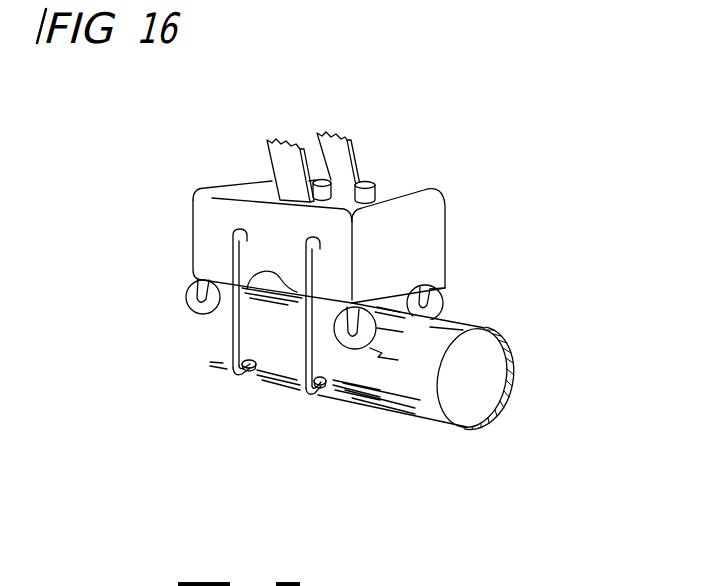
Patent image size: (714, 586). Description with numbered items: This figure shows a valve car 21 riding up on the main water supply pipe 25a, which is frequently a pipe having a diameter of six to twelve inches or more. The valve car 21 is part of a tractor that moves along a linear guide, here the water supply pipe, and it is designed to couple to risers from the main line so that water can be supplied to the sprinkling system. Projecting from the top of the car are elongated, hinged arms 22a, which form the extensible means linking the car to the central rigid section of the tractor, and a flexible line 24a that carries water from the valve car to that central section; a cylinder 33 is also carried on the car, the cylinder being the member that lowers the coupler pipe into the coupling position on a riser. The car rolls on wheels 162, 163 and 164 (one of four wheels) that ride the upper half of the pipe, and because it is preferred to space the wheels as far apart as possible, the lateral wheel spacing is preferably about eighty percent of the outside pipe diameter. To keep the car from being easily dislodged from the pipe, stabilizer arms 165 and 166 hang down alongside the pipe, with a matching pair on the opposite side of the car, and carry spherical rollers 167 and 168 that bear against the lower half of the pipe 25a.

The valve car 21 is at (441, 252).
The elongated hinged arm 22a is at (270, 170).
The flexible line 24a is at (330, 186).
The cylinder 33 is at (374, 197).
The main water supply pipe 25a is at (505, 373).
The wheel 162 is at (185, 300).
The wheel 163 is at (270, 282).
The wheel 164 is at (447, 307).
The stabilizer arm 165 is at (300, 348).
The stabilizer arm 166 is at (227, 326).
The spherical roller 167 is at (319, 393).
The spherical roller 168 is at (248, 371).